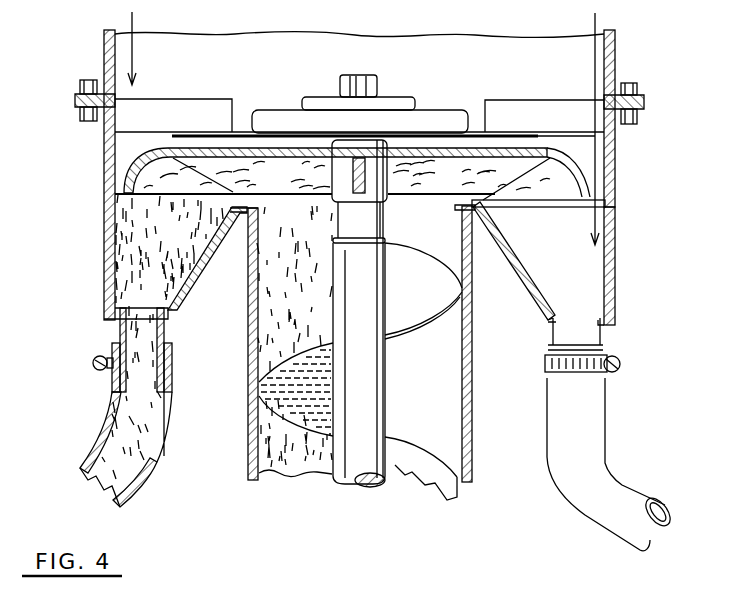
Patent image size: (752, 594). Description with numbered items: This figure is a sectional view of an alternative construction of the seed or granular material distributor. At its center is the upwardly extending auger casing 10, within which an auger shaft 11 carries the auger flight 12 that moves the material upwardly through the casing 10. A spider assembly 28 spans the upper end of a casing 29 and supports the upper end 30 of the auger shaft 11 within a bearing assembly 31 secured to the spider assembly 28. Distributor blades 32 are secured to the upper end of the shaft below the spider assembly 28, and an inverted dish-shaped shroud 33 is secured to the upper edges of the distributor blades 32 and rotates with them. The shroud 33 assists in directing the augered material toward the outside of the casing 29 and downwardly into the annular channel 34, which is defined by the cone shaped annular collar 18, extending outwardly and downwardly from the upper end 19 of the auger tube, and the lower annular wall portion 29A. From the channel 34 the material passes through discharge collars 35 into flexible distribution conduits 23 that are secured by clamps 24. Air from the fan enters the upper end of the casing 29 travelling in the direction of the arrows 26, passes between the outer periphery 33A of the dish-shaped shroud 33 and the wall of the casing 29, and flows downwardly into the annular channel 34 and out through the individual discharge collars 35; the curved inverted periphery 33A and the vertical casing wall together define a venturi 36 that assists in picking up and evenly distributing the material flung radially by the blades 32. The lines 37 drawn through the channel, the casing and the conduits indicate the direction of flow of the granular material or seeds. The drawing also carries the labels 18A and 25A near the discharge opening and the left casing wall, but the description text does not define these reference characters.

The auger casing 10 is at (472, 447).
The auger shaft 11 is at (363, 462).
The auger flight 12 is at (445, 294).
The cone shaped annular collar 18 is at (508, 232).
The outlet opening 18A is at (544, 312).
The upper end of the auger tube portion 19 is at (472, 197).
The flexible distribution conduits 23 is at (105, 441).
The clamps 24 is at (93, 363).
The left wall 25A is at (104, 52).
The arrows 26 is at (610, 28).
The spider assembly 28 is at (503, 107).
The casing 29 is at (104, 143).
The lower annular wall portion 29A is at (614, 262).
The upper end of the auger shaft 30 is at (377, 85).
The bearing assembly 31 is at (418, 118).
The distributor blades 32 is at (498, 181).
The inverted dish-shaped shroud 33 is at (566, 130).
The outer periphery of the dish-shaped shroud 33A is at (610, 170).
The annular channel 34 is at (516, 268).
The discharge collars 35 is at (568, 330).
The venturi 36 is at (605, 198).
The lines 37 is at (127, 278).